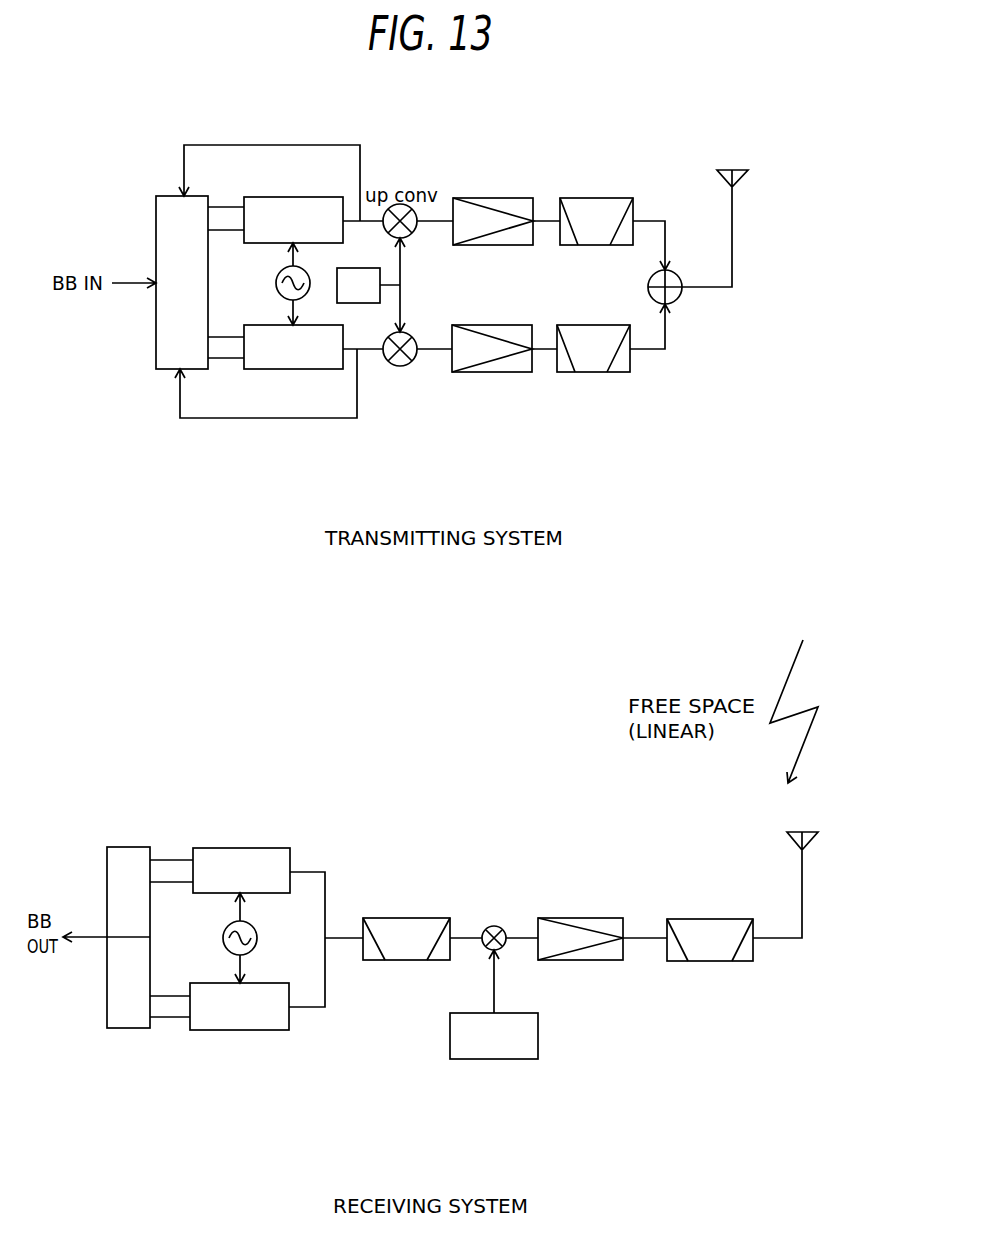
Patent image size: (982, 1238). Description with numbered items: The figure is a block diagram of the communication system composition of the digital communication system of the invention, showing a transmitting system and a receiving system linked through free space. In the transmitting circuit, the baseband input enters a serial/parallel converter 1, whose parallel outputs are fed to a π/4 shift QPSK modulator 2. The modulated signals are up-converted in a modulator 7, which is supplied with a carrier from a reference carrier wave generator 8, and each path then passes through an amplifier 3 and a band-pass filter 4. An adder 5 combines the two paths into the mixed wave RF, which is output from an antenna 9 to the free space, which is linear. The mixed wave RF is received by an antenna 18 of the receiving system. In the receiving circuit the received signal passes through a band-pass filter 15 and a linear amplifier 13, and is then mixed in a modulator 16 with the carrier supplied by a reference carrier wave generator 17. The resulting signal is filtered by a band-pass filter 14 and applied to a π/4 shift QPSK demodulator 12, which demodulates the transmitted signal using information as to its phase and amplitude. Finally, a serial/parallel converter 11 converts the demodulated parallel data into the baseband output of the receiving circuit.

The serial/parallel converter 1 is at (167, 195).
The π/4 shift QPSK modulator 2 is at (296, 196).
The amplifier 3 is at (526, 198).
The band-pass filter 4 is at (625, 198).
The adder 5 is at (648, 285).
The modulator 7 is at (411, 237).
The reference carrier wave generator 8 is at (357, 303).
The antenna 9 is at (732, 265).
The serial/parallel converter 11 is at (113, 847).
The π/4 shift QPSK demodulator 12 is at (242, 848).
The linear amplifier 13 is at (575, 960).
The band-pass filter 14 is at (392, 918).
The band-pass filter 15 is at (708, 961).
The modulator 16 is at (497, 925).
The reference carrier wave generator 17 is at (494, 1060).
The antenna 18 is at (800, 878).